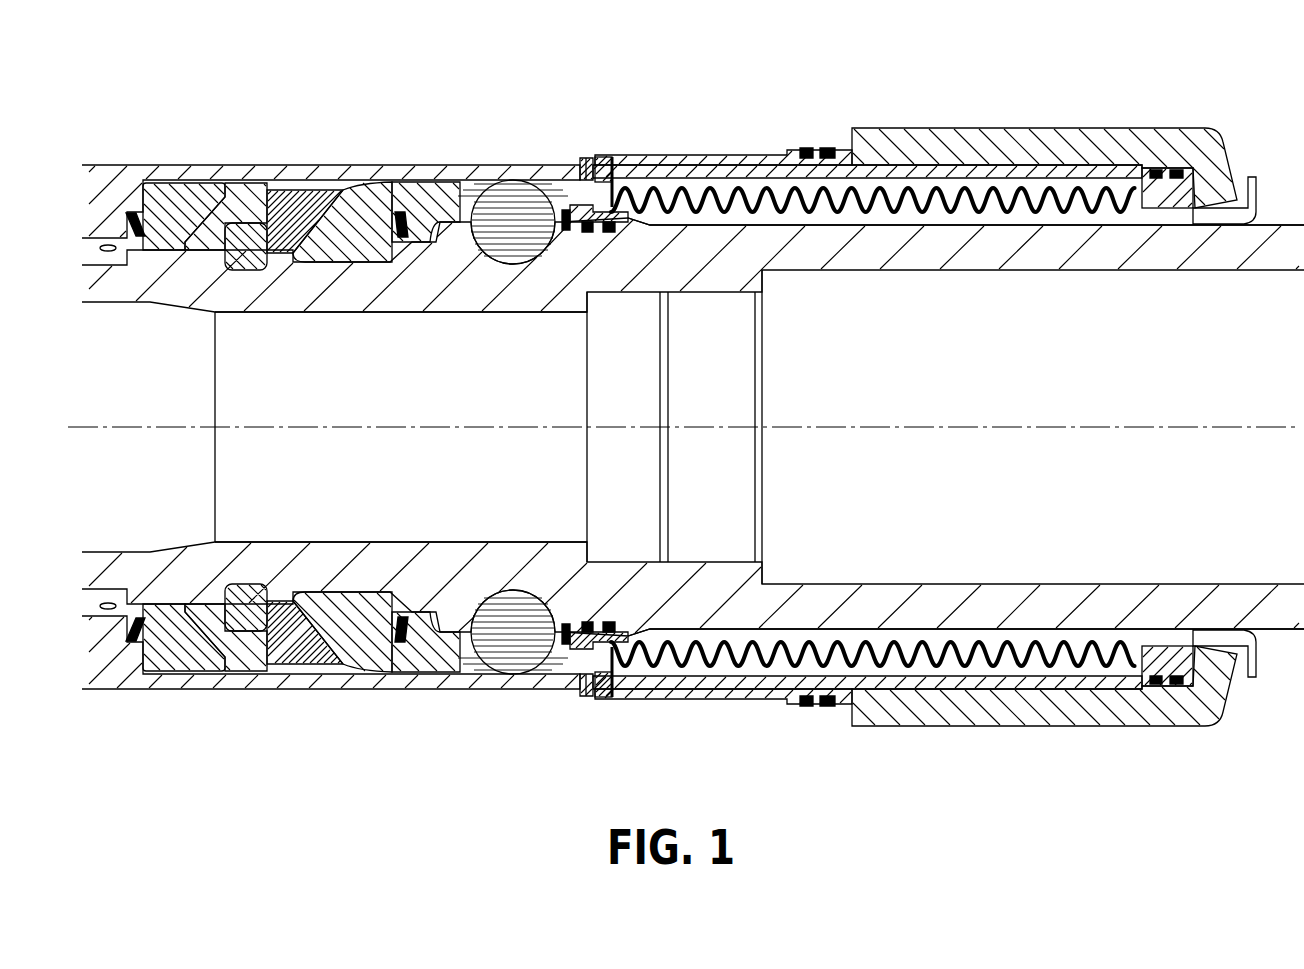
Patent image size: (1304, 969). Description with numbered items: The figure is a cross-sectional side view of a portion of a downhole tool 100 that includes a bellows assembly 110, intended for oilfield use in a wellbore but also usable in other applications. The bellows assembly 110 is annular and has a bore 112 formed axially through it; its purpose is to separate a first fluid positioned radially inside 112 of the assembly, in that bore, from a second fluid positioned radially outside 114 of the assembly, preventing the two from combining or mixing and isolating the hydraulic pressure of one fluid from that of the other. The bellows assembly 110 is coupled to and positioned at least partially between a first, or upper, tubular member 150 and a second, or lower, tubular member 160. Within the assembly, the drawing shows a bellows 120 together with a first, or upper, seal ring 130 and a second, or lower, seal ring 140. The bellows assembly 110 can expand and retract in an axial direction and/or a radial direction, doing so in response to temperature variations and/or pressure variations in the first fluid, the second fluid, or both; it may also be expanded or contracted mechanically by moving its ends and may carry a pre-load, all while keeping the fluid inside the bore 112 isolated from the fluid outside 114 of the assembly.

The downhole tool 100 is at (186, 90).
The bellows assembly 110 is at (921, 170).
The bore 112 is at (1056, 378).
The radially outside 114 is at (1056, 29).
The bellows 120 is at (972, 215).
The first seal ring 130 is at (597, 207).
The second seal ring 140 is at (1175, 190).
The first tubular member 150 is at (412, 313).
The second tubular member 160 is at (980, 128).